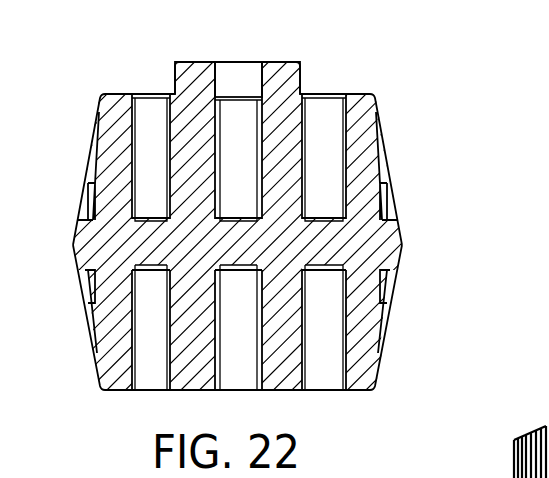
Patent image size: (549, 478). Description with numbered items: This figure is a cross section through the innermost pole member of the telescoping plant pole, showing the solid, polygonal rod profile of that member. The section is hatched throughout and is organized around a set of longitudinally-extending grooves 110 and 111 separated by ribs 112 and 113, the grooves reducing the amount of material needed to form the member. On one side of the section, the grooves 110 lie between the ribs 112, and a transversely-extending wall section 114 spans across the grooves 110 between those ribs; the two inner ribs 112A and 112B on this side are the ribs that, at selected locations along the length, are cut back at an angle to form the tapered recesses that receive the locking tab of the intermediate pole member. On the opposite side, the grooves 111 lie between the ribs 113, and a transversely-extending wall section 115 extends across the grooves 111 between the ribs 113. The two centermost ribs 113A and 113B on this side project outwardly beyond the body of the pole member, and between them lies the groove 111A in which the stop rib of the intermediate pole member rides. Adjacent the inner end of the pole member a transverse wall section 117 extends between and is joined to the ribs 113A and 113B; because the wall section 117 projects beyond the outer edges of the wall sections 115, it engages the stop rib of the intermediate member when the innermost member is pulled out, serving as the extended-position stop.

The longitudinally-extending groove 110 is at (148, 290).
The longitudinally-extending groove 111 is at (158, 158).
The groove 111A is at (237, 137).
The rib 112 is at (108, 384).
The inner rib 112A is at (197, 330).
The inner rib 112B is at (280, 327).
The rib 113 is at (113, 120).
The centermost rib 113A is at (217, 82).
The centermost rib 113B is at (280, 72).
The transversely-extending wall section 114 is at (325, 392).
The transversely-extending wall section 115 is at (157, 94).
The transverse wall section 117 is at (237, 62).